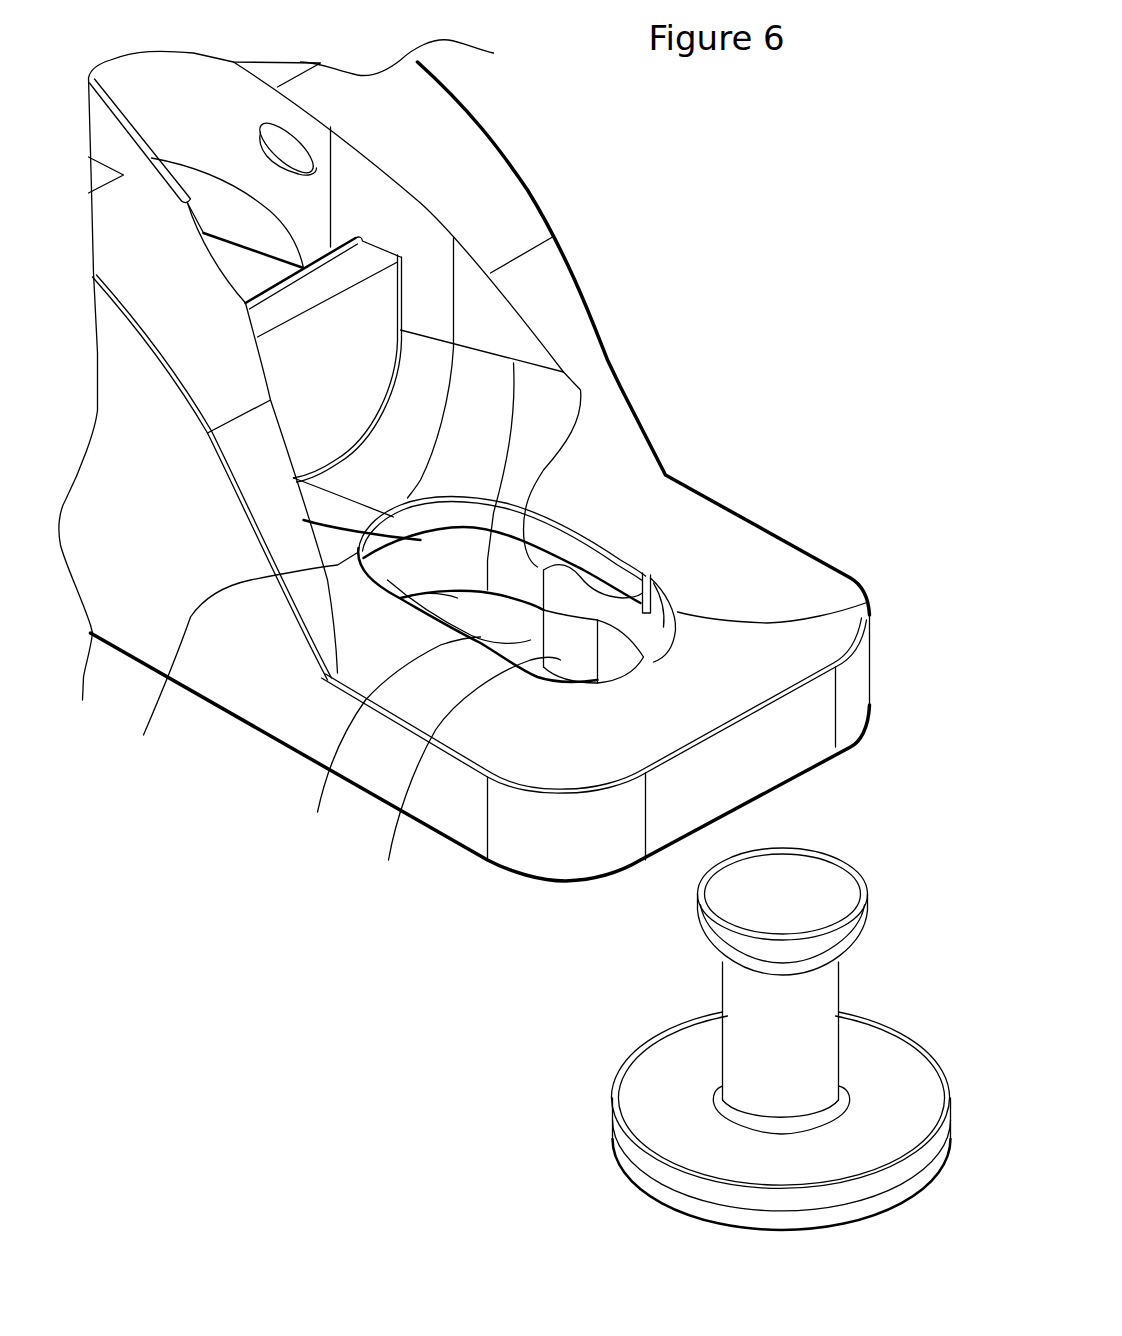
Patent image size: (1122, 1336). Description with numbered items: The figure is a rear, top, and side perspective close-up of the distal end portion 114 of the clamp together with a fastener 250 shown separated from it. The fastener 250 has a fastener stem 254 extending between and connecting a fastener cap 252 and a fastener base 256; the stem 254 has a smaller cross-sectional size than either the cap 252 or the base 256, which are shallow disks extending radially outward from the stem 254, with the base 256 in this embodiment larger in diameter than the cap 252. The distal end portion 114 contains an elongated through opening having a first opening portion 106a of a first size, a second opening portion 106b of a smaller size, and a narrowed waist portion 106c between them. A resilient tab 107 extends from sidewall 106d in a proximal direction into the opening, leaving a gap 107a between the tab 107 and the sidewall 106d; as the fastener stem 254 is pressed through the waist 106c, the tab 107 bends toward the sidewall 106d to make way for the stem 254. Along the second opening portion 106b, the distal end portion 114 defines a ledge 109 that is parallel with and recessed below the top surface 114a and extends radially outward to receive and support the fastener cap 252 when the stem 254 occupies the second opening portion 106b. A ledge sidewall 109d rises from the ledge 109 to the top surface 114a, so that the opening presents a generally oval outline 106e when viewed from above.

The distal end portion 114 is at (223, 763).
The top surface 114a is at (778, 588).
The first opening portion 106a is at (236, 661).
The second opening portion 106b is at (465, 778).
The waist portion 106c is at (391, 742).
The sidewall 106d is at (592, 452).
The oval outline 106e is at (678, 625).
The resilient tab 107 is at (578, 595).
The gap 107a is at (622, 600).
The ledge 109 is at (865, 604).
The ledge sidewall 109d is at (662, 630).
The fastener 250 is at (704, 1039).
The fastener cap 252 is at (712, 928).
The fastener stem 254 is at (733, 1020).
The fastener base 256 is at (660, 1122).